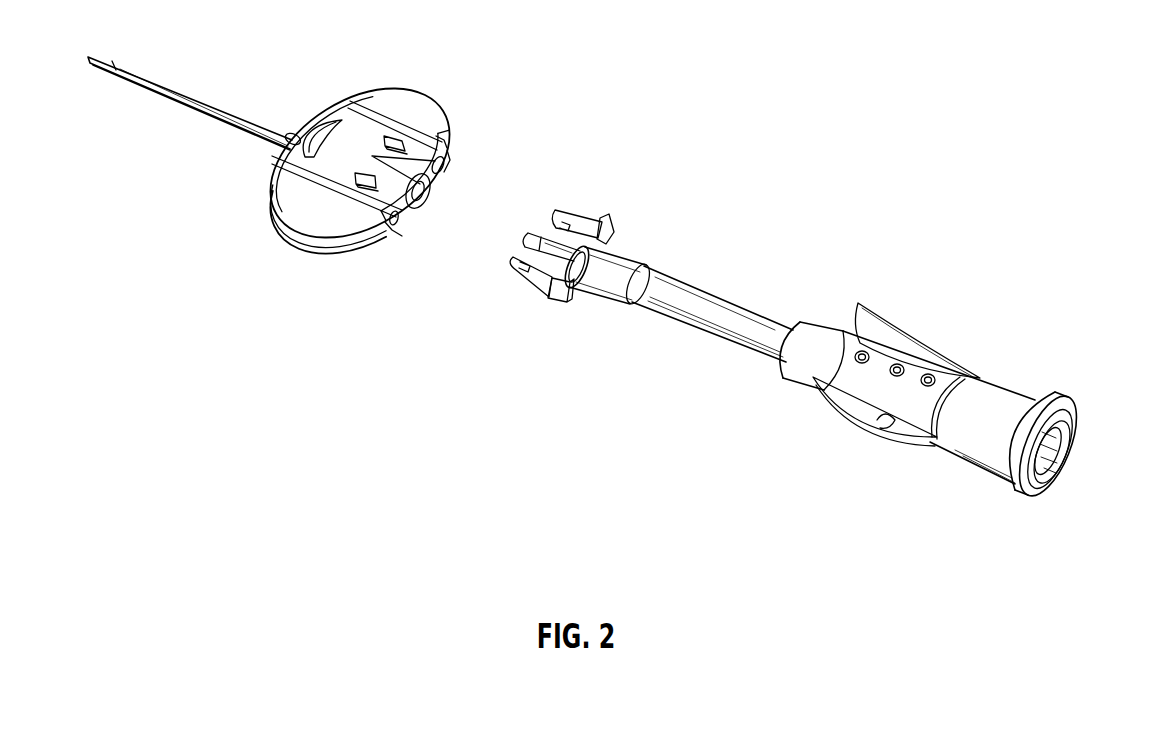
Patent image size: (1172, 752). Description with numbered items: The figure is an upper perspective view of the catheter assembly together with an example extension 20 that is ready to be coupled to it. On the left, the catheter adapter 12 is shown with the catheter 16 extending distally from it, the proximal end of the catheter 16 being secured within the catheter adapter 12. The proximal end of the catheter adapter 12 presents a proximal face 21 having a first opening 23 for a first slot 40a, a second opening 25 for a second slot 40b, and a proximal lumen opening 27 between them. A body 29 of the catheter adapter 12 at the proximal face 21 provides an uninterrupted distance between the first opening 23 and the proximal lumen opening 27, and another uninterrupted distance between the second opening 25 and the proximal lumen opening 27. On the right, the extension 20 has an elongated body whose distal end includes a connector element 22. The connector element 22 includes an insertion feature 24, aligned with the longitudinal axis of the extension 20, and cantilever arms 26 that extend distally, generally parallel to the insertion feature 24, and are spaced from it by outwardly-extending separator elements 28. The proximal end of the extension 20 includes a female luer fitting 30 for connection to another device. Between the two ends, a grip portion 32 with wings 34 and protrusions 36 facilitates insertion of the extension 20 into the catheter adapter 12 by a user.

The catheter adapter 12 is at (345, 52).
The catheter 16 is at (188, 97).
The extension 20 is at (784, 297).
The proximal face 21 is at (436, 184).
The connector element 22 is at (598, 199).
The first opening 23 is at (400, 229).
The insertion feature 24 is at (546, 239).
The second opening 25 is at (446, 170).
The cantilever arms 26 is at (570, 207).
The proximal lumen opening 27 is at (428, 199).
The separator elements 28 is at (613, 237).
The body 29 is at (437, 136).
The female luer fitting 30 is at (1083, 416).
The grip portion 32 is at (938, 309).
The wings 34 is at (948, 368).
The protrusions 36 is at (861, 350).
The first slot 40a is at (399, 236).
The second slot 40b is at (457, 158).